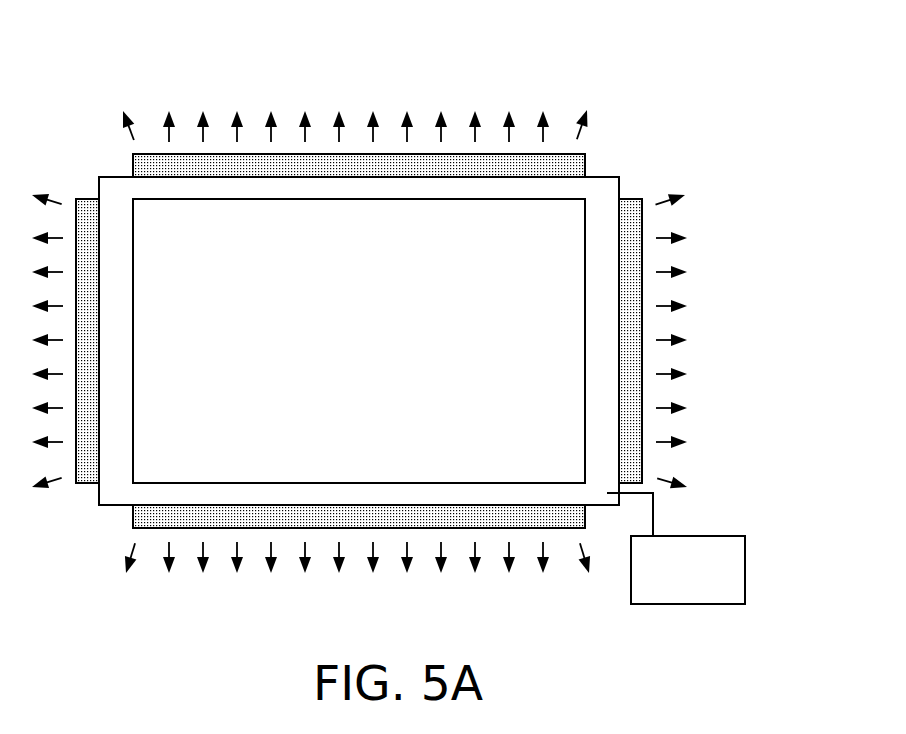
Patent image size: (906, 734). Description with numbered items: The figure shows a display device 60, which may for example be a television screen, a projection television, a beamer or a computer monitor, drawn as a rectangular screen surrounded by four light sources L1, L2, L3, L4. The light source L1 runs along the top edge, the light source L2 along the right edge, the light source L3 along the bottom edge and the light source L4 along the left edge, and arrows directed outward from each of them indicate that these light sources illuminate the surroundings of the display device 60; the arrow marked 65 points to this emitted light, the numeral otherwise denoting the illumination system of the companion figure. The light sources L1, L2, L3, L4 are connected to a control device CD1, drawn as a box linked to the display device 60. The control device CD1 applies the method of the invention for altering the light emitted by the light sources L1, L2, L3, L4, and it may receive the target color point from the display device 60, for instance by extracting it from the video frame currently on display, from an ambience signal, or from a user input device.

The display device 60 is at (642, 85).
The illumination system 65 is at (720, 319).
The light source L1 is at (582, 165).
The light source L2 is at (638, 430).
The light source L3 is at (138, 518).
The light source L4 is at (85, 207).
The control device CD1 is at (676, 548).